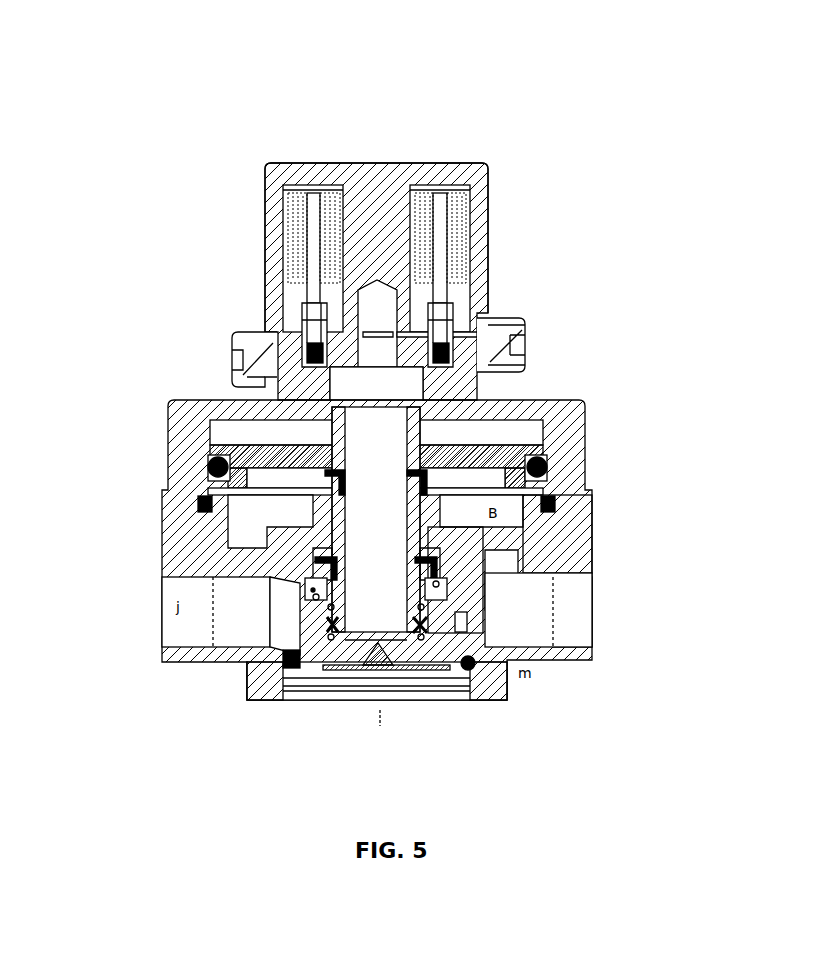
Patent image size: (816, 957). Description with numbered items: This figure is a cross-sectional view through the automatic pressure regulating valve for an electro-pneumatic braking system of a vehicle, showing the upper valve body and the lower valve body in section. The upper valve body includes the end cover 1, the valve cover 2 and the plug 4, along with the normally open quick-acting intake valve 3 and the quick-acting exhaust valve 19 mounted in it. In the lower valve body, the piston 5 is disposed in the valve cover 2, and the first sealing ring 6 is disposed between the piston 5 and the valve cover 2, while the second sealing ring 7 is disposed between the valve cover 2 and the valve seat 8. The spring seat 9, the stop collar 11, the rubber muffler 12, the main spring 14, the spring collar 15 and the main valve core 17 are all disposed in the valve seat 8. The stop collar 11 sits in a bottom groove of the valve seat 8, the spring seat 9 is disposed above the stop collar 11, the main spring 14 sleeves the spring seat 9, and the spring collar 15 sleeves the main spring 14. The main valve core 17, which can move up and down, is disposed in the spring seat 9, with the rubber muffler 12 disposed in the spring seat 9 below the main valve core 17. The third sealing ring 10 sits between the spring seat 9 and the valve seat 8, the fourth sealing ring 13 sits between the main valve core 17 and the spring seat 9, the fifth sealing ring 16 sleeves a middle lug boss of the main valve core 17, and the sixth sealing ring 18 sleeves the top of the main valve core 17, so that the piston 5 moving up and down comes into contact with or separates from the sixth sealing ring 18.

The end cover 1 is at (348, 172).
The valve cover 2 is at (386, 235).
The normally open quick-acting intake valve 3 is at (450, 292).
The plug 4 is at (495, 347).
The piston 5 is at (433, 460).
The first sealing ring 6 is at (537, 464).
The second sealing ring 7 is at (548, 505).
The valve seat 8 is at (550, 543).
The spring seat 9 is at (463, 621).
The third sealing ring 10 is at (468, 663).
The stop collar 11 is at (278, 681).
The rubber muffler 12 is at (292, 660).
The fourth sealing ring 13 is at (332, 622).
The main spring 14 is at (313, 590).
The spring collar 15 is at (205, 505).
The fifth sealing ring 16 is at (190, 495).
The main valve core 17 is at (295, 567).
The sixth sealing ring 18 is at (343, 533).
The quick-acting exhaust valve 19 is at (313, 317).